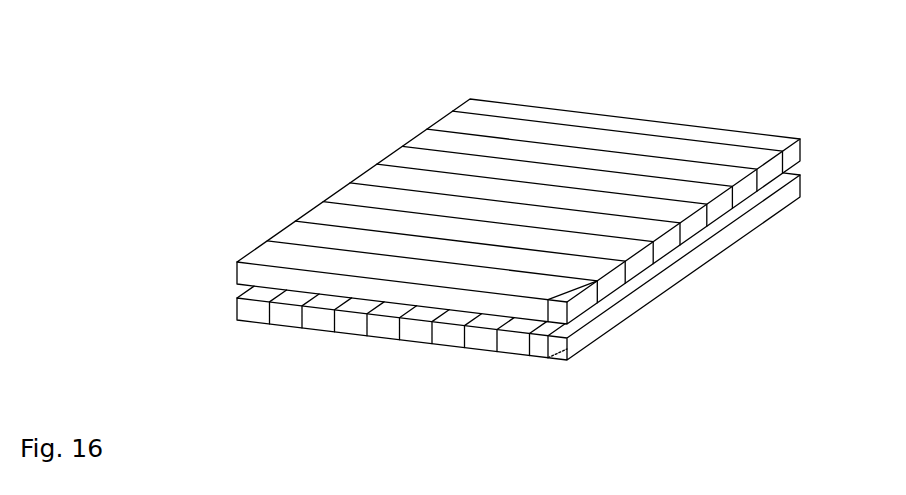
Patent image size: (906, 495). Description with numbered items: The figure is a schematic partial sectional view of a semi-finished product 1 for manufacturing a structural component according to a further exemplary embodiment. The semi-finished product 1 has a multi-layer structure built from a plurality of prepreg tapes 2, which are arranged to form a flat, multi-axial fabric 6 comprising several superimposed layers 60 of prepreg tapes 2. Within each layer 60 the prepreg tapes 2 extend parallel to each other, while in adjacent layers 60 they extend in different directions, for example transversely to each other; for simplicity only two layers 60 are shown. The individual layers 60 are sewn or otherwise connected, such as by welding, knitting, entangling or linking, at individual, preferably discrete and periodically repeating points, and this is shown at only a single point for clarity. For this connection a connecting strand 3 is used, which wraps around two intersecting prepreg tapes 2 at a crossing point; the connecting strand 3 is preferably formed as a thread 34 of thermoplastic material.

The semi-finished product 1 is at (466, 207).
The multi-axial fabric 6 is at (466, 229).
The layer 60 is at (466, 247).
The prepreg tape 2 is at (237, 322).
The connecting strand 3 is at (617, 338).
The thread 34 is at (611, 331).